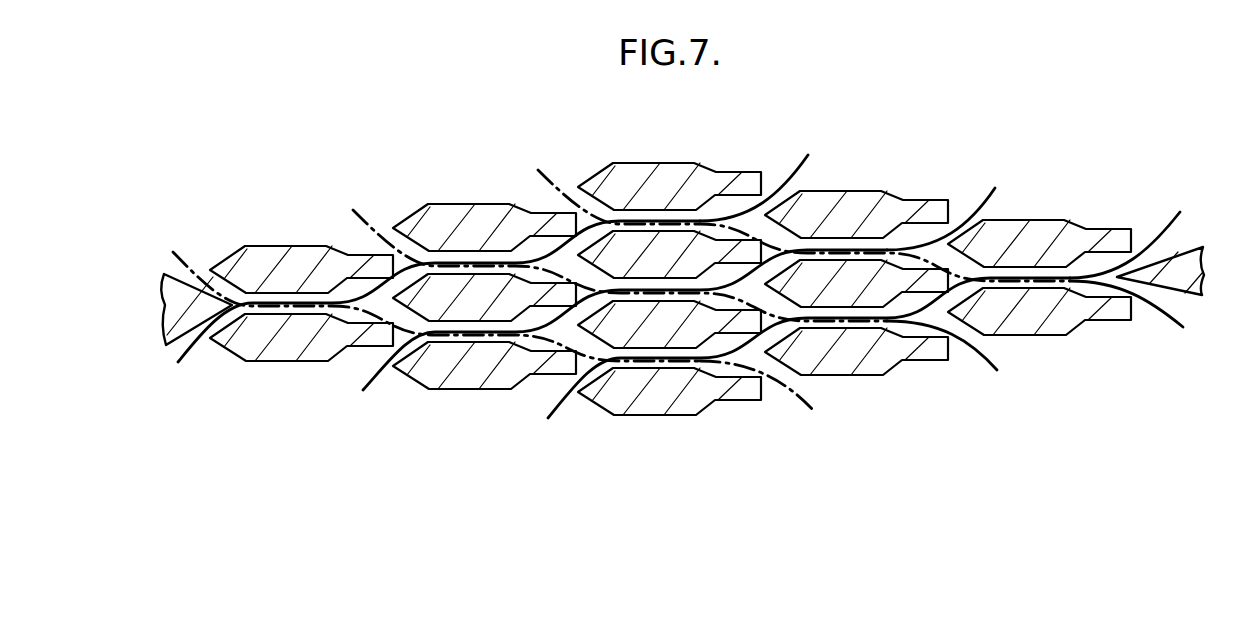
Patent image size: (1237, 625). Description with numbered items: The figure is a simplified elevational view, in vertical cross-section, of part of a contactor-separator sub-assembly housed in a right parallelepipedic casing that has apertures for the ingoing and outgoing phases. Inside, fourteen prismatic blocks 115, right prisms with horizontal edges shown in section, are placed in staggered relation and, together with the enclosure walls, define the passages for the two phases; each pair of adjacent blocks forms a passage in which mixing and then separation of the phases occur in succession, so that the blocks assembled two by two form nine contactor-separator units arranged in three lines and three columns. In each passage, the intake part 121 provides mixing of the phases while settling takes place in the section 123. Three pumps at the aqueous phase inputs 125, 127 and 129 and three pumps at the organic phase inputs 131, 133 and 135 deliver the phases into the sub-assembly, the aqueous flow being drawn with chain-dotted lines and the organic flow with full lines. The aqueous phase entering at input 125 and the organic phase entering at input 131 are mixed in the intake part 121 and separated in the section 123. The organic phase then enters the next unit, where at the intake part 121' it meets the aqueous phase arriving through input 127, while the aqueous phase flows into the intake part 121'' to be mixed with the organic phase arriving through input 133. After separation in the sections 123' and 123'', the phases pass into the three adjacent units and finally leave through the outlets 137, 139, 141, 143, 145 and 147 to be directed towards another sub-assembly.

The prismatic blocks 115 is at (647, 393).
The intake part 121 is at (301, 421).
The intake part 121' is at (484, 235).
The intake part 121'' is at (484, 400).
The settling section 123 is at (311, 401).
The settling section 123' is at (524, 175).
The settling section 123'' is at (569, 406).
The aqueous phase input 125 is at (168, 243).
The aqueous phase input 127 is at (348, 203).
The aqueous phase input 129 is at (532, 163).
The organic phase input 131 is at (172, 372).
The organic phase input 133 is at (358, 398).
The organic phase input 135 is at (543, 425).
The outlet 137 is at (766, 176).
The outlet 139 is at (952, 206).
The outlet 141 is at (1136, 233).
The outlet 143 is at (766, 399).
The outlet 145 is at (952, 360).
The outlet 147 is at (1136, 318).